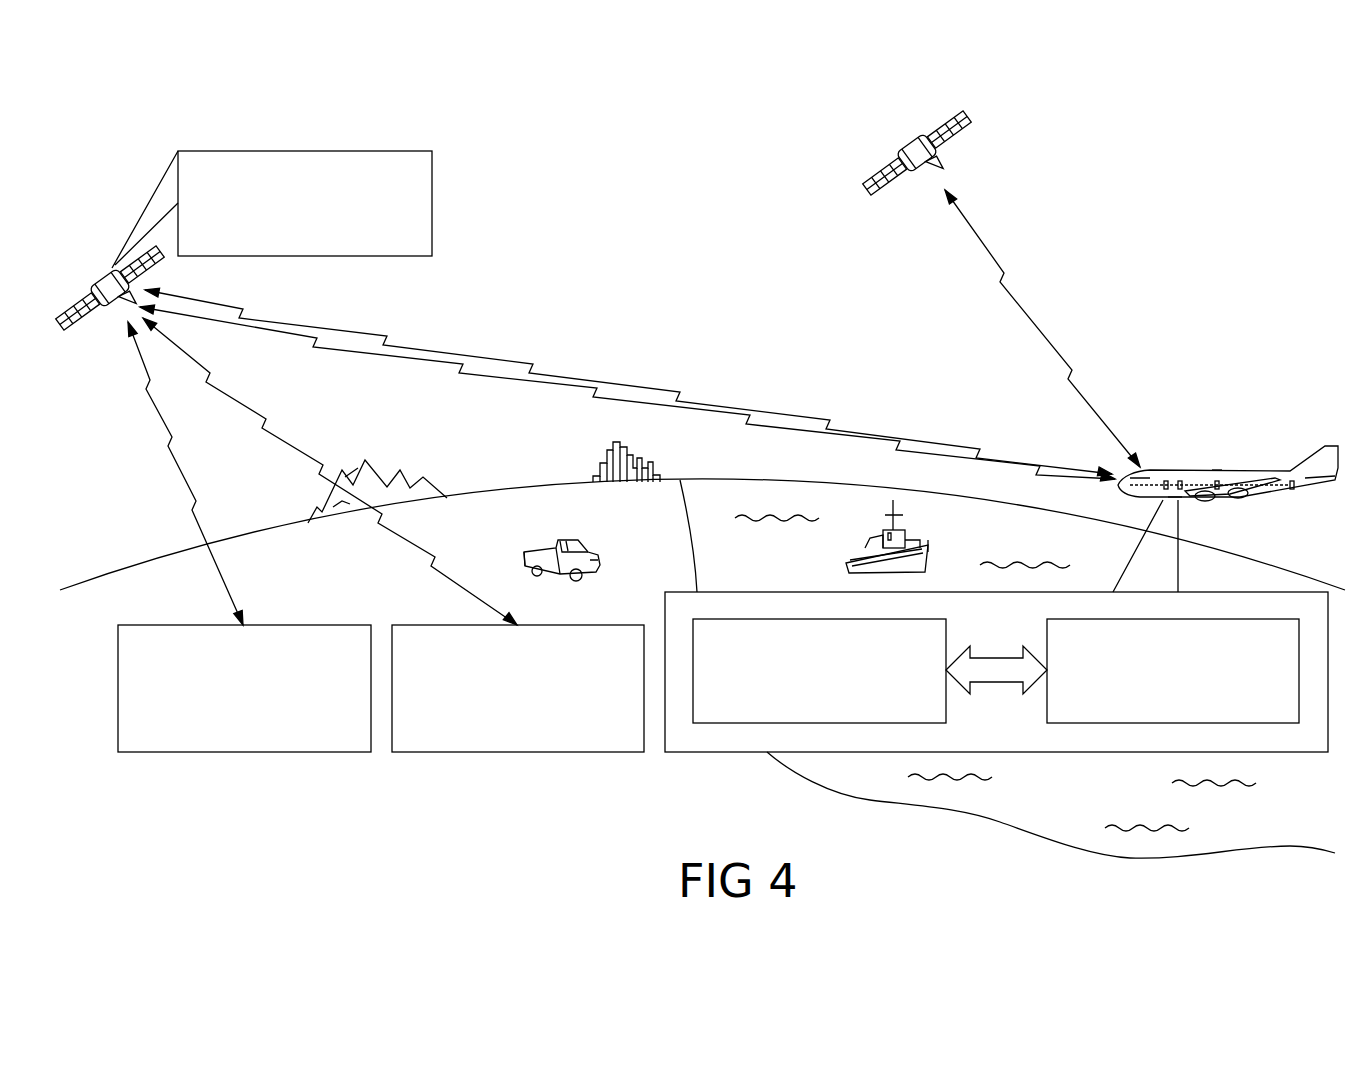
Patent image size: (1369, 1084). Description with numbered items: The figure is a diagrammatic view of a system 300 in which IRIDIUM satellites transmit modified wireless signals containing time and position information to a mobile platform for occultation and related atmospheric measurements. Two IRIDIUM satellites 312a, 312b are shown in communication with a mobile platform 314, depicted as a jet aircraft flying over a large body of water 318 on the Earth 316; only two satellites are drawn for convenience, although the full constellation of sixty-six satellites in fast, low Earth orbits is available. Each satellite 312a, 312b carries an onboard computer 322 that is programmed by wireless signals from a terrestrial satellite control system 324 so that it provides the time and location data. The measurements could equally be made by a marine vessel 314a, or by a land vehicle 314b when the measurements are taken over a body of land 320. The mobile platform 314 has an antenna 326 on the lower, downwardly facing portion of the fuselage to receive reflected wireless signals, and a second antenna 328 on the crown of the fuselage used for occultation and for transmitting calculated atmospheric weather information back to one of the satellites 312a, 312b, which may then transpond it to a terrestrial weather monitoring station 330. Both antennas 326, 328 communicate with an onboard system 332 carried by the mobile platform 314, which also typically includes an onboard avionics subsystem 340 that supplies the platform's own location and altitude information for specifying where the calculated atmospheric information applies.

The system 300 is at (1198, 392).
The IRIDIUM satellite 312a is at (143, 309).
The IRIDIUM satellite 312b is at (950, 180).
The mobile platform 314 is at (1278, 455).
The marine vessel 314a is at (870, 545).
The land vehicle 314b is at (575, 545).
The Earth 316 is at (845, 481).
The body of water 318 is at (772, 492).
The body of land 320 is at (530, 495).
The onboard computer 322 is at (285, 240).
The terrestrial satellite control system 324 is at (225, 739).
The antenna 326 is at (1175, 497).
The second antenna 328 is at (1217, 470).
The terrestrial weather monitoring station 330 is at (498, 739).
The onboard system 332 is at (800, 708).
The onboard avionics subsystem 340 is at (1153, 708).